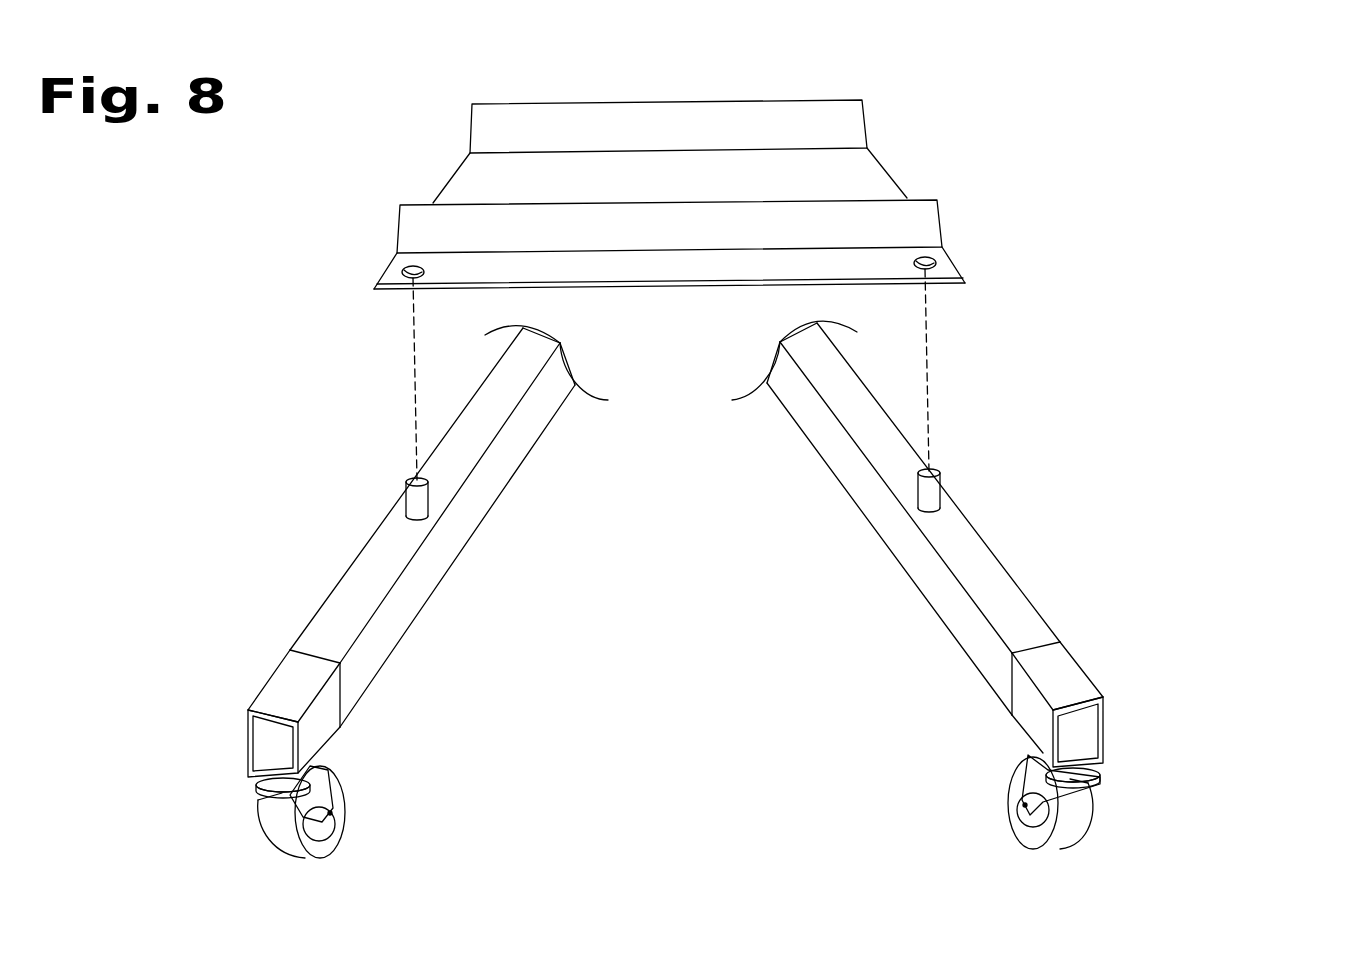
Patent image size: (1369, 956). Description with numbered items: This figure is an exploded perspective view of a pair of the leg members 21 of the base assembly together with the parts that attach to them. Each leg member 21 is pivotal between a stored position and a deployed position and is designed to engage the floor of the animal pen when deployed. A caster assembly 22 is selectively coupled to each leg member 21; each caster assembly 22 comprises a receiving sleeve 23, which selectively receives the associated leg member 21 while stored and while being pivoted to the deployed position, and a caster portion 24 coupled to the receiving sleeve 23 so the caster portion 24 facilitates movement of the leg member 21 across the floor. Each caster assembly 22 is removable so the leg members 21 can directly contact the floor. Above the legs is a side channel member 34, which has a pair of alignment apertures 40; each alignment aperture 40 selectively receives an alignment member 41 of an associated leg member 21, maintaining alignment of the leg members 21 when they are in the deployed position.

The leg member 21 is at (352, 597).
The caster assembly 22 is at (1118, 667).
The receiving sleeve 23 is at (323, 717).
The caster portion 24 is at (273, 823).
The side channel member 34 is at (865, 176).
The alignment aperture 40 is at (405, 267).
The alignment member 41 is at (411, 497).